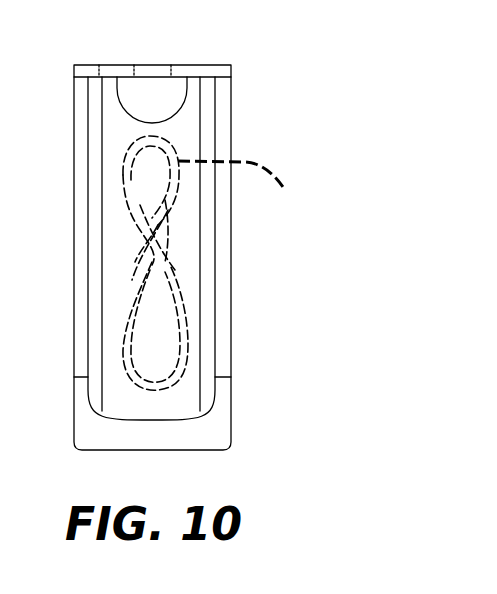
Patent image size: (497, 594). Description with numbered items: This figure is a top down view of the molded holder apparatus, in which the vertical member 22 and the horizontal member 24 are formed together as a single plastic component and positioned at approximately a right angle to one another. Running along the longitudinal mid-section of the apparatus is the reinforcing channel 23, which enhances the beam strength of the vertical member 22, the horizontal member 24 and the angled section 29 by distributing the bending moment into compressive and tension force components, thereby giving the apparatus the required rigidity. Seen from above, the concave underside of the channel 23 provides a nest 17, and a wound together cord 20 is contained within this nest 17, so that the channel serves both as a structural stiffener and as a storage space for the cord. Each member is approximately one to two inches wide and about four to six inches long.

The nest 17 is at (188, 258).
The wound together cord 20 is at (237, 195).
The vertical member 22 is at (122, 65).
The reinforcing channel 23 is at (152, 90).
The horizontal member 24 is at (102, 227).
The angled section 29 is at (129, 420).